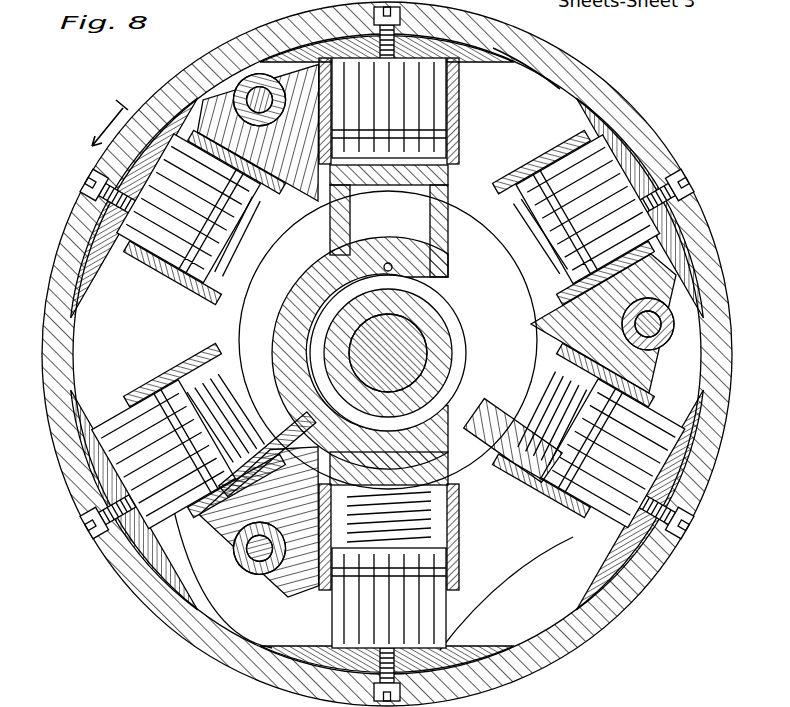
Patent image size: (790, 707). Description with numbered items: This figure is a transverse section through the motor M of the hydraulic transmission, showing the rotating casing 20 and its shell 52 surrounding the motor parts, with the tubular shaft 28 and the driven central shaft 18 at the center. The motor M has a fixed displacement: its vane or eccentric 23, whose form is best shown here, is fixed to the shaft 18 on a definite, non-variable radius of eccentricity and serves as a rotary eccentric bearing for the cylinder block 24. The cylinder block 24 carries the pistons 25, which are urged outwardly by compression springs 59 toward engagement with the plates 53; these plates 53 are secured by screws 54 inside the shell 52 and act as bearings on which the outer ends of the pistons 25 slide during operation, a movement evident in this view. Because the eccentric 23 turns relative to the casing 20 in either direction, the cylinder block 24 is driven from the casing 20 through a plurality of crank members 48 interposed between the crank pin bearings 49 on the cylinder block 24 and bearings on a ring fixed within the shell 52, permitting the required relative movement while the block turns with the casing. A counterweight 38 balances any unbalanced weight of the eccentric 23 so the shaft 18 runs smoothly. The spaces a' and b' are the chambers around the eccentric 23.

The central shaft 18 is at (418, 338).
The casing 20 is at (723, 240).
The vane or eccentric 23 is at (449, 240).
The cylinder block 24 is at (463, 143).
The pistons 25 is at (389, 108).
The tubular shaft 28 is at (432, 323).
The counterweight 38 is at (505, 584).
The crank members 48 is at (243, 97).
The crank pin bearings 49 is at (280, 84).
The shell 52 is at (540, 50).
The plates 53 is at (470, 58).
The screw 54 is at (380, 24).
The compression springs 59 is at (425, 522).
The motor M is at (562, 129).
The chamber a' is at (498, 376).
The clearance space b' is at (286, 236).